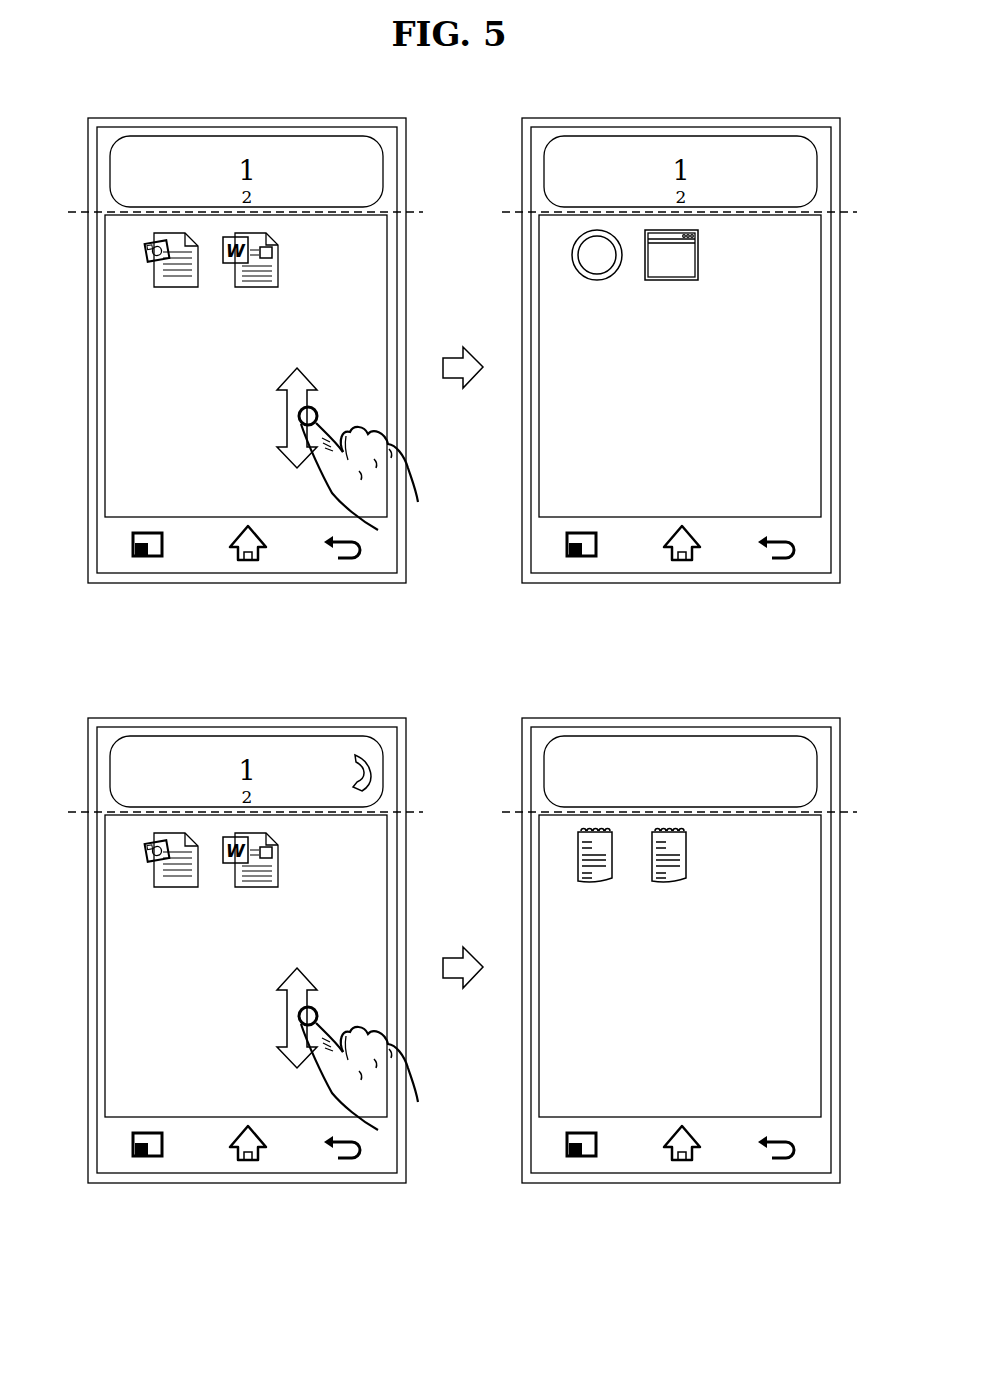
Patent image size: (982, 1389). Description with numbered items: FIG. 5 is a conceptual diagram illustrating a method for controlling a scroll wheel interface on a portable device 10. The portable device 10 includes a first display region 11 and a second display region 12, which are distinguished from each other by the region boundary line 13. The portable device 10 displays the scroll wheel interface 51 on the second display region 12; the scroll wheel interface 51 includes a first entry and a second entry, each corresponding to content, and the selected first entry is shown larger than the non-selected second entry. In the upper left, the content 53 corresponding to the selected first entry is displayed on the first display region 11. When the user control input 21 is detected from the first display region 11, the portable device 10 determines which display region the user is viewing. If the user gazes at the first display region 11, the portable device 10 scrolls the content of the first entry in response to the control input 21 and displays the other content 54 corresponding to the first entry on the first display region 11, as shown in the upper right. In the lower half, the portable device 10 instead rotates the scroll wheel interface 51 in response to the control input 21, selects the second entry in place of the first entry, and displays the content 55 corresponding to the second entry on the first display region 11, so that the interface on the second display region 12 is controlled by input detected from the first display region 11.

The portable device 10 is at (302, 583).
The first display region 11 is at (132, 459).
The second display region 12 is at (286, 133).
The region boundary line 13 is at (418, 211).
The user control input 21 is at (388, 483).
The scroll wheel interface 51 is at (141, 168).
The content 53 is at (155, 266).
The other content 54 is at (585, 257).
The content 55 is at (585, 857).